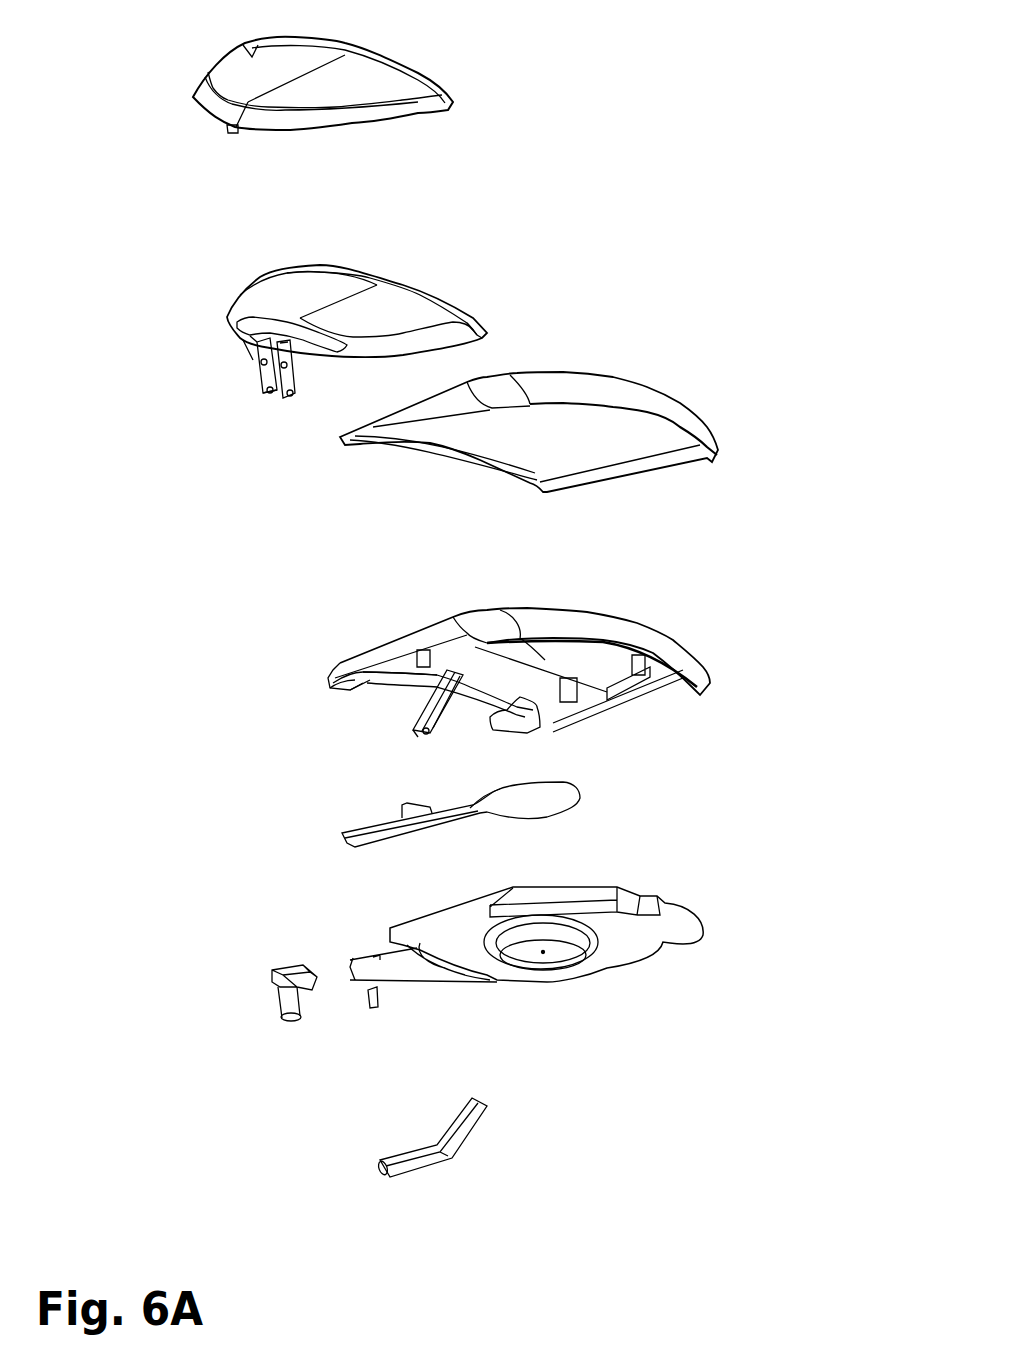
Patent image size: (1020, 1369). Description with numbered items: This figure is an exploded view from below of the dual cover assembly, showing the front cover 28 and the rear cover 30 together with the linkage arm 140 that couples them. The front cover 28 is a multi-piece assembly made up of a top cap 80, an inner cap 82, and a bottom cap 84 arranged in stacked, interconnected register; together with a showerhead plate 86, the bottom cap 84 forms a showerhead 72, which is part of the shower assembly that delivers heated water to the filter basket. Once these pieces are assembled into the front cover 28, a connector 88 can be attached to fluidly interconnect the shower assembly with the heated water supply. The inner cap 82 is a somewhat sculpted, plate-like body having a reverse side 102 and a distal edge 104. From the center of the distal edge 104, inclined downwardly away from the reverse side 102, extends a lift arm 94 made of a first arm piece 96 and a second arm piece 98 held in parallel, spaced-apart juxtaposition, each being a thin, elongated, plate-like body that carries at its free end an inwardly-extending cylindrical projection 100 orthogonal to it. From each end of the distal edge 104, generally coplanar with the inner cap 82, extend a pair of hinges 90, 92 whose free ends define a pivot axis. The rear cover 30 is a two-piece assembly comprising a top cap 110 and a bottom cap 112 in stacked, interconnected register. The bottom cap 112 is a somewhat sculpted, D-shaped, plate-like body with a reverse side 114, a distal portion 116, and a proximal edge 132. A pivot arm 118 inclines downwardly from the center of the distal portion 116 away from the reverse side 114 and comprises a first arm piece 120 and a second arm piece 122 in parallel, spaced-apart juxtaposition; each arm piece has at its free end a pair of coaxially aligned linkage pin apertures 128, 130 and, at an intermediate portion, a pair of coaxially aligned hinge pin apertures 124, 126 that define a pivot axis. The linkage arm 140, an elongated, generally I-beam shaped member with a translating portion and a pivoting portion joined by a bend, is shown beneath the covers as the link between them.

The front cover 28 is at (780, 990).
The rear cover 30 is at (155, 41).
The showerhead 72 is at (553, 953).
The top cap 80 is at (615, 385).
The inner cap 82 is at (617, 625).
The bottom cap 84 is at (617, 933).
The showerhead plate 86 is at (565, 798).
The connector 88 is at (283, 997).
The hinge 90 is at (497, 733).
The hinge 92 is at (353, 683).
The lift arm 94 is at (403, 737).
The first arm piece 96 is at (417, 713).
The second arm piece 98 is at (437, 713).
The cylindrical projection 100 is at (422, 733).
The reverse side 102 is at (527, 667).
The distal edge 104 is at (403, 663).
The top cap 110 is at (367, 78).
The bottom cap 112 is at (387, 313).
The reverse side 114 is at (327, 293).
The distal portion 116 is at (240, 350).
The pivot arm 118 is at (272, 403).
The first arm piece 120 is at (270, 373).
The second arm piece 122 is at (295, 380).
The hinge pin aperture 124 is at (240, 313).
The hinge pin aperture 126 is at (287, 347).
The linkage pin aperture 128 is at (268, 393).
The linkage pin aperture 130 is at (290, 397).
The proximal edge 132 is at (477, 313).
The linkage arm 140 is at (430, 1170).